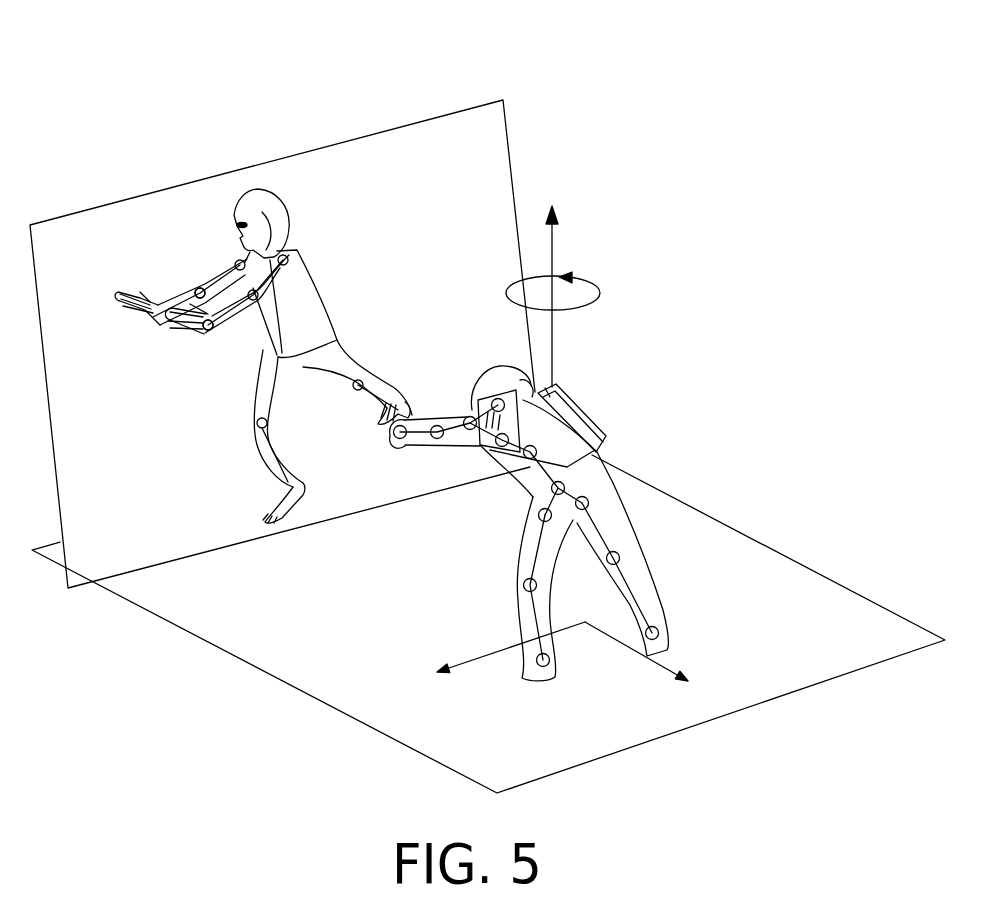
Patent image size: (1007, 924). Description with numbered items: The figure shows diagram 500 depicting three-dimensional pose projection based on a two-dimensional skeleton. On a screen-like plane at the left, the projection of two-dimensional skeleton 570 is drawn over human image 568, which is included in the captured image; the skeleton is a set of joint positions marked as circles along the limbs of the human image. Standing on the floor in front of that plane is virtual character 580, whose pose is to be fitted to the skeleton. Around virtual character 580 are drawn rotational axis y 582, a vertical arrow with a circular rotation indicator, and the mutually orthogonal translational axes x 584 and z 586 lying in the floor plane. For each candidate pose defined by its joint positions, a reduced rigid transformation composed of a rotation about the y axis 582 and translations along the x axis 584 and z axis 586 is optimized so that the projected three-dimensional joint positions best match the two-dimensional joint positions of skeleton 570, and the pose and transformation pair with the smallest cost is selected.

The diagram 500 is at (618, 62).
The human image 568 is at (290, 203).
The 2D skeleton 570 is at (177, 297).
The virtual character 580 is at (617, 404).
The rotational axis y 582 is at (553, 325).
The translational axis x 584 is at (463, 658).
The translational axis z 586 is at (643, 656).